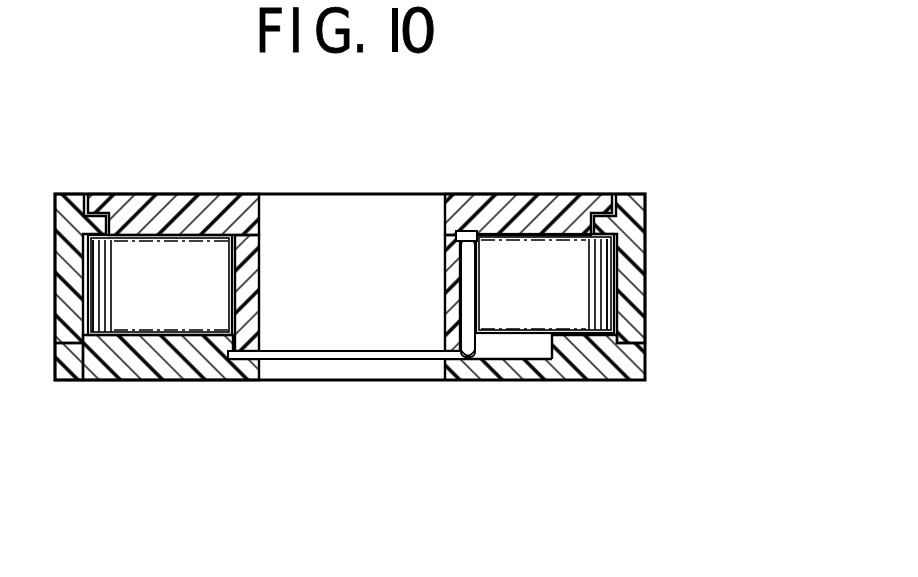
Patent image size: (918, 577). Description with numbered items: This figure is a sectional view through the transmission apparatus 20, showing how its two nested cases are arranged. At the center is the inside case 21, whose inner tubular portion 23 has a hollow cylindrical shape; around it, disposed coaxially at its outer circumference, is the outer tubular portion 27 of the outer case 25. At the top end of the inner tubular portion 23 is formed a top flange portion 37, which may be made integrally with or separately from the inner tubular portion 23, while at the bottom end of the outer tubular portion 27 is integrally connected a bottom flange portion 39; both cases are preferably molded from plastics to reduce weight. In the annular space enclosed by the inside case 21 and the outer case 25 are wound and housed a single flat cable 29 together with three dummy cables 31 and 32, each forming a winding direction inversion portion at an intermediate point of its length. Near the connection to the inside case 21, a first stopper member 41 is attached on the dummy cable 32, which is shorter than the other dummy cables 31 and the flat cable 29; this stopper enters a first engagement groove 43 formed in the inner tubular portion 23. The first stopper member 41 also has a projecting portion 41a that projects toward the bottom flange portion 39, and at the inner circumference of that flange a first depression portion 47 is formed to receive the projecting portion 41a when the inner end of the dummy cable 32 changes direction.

The transmission apparatus 20 is at (662, 168).
The inside case 21 is at (243, 192).
The inner tubular portion 23 is at (257, 273).
The outer case 25 is at (652, 322).
The outer tubular portion 27 is at (632, 279).
The flat cable 29 is at (113, 290).
The dummy cable 31 is at (481, 278).
The dummy cable 32 is at (350, 285).
The top flange portion 37 is at (172, 218).
The bottom flange portion 39 is at (607, 356).
The first stopper member 41 is at (472, 236).
The projecting portion 41a is at (480, 340).
The first engagement groove 43 is at (467, 231).
The first depression portion 47 is at (533, 345).